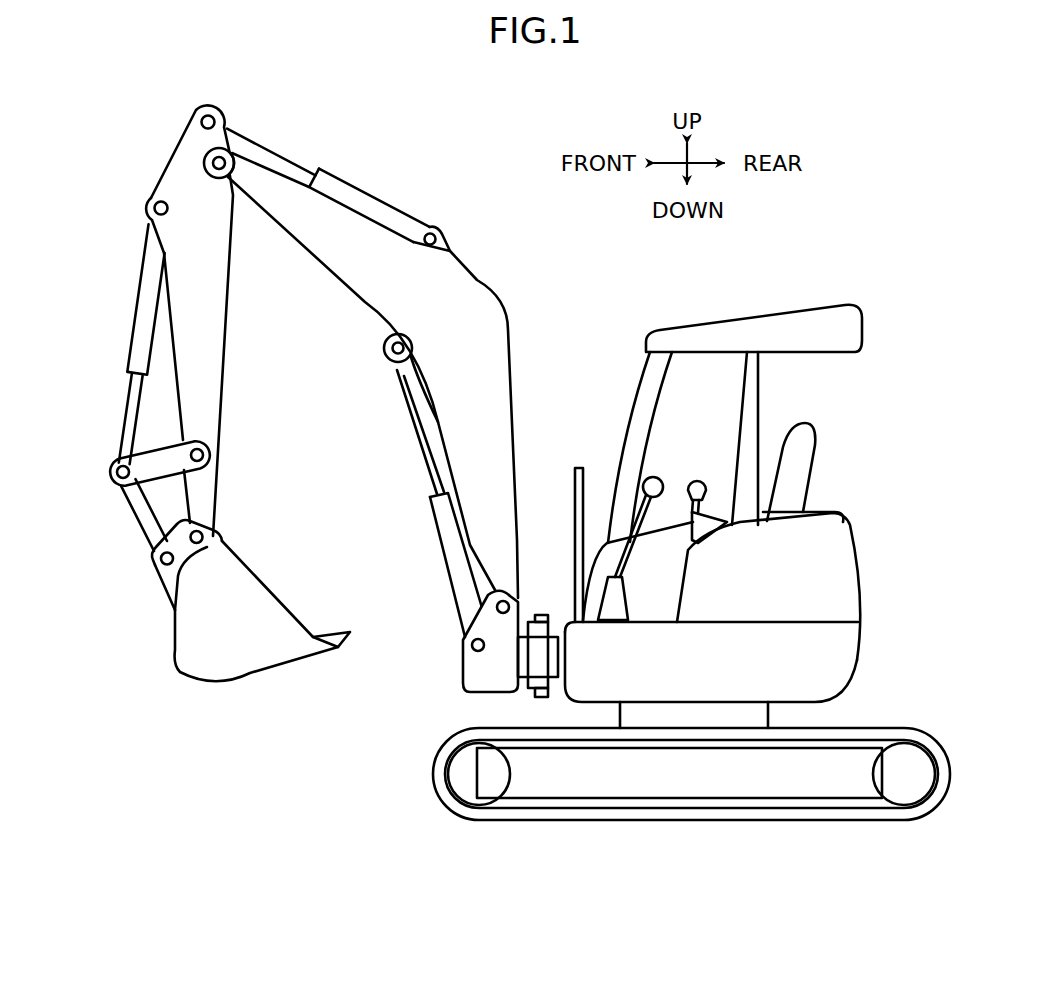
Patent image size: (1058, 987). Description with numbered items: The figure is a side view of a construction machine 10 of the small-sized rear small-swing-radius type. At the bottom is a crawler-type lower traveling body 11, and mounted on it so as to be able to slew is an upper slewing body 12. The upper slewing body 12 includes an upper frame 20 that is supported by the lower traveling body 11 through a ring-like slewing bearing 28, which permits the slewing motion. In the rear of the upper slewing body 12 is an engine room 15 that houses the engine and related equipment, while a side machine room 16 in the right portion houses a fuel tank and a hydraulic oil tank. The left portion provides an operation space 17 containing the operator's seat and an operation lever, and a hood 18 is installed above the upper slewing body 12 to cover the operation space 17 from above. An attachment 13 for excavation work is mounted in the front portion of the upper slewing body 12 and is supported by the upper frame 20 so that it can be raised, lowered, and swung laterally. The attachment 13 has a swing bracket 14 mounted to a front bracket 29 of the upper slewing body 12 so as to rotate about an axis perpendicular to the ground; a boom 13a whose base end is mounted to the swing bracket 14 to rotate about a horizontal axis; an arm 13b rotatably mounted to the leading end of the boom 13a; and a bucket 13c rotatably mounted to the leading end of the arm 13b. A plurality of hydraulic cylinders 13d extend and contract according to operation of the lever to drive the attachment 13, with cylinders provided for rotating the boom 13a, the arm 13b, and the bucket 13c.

The construction machine 10 is at (845, 231).
The lower traveling body 11 is at (433, 777).
The upper slewing body 12 is at (852, 499).
The attachment 13 is at (460, 227).
The boom 13a is at (496, 318).
The arm 13b is at (222, 302).
The bucket 13c is at (256, 667).
The hydraulic cylinders 13d is at (371, 200).
The swing bracket 14 is at (465, 673).
The engine room 15 is at (844, 553).
The side machine room 16 is at (672, 540).
The operation space 17 is at (775, 412).
The hood 18 is at (852, 330).
The upper frame 20 is at (852, 658).
The slewing bearing 28 is at (758, 720).
The front bracket 29 is at (554, 620).